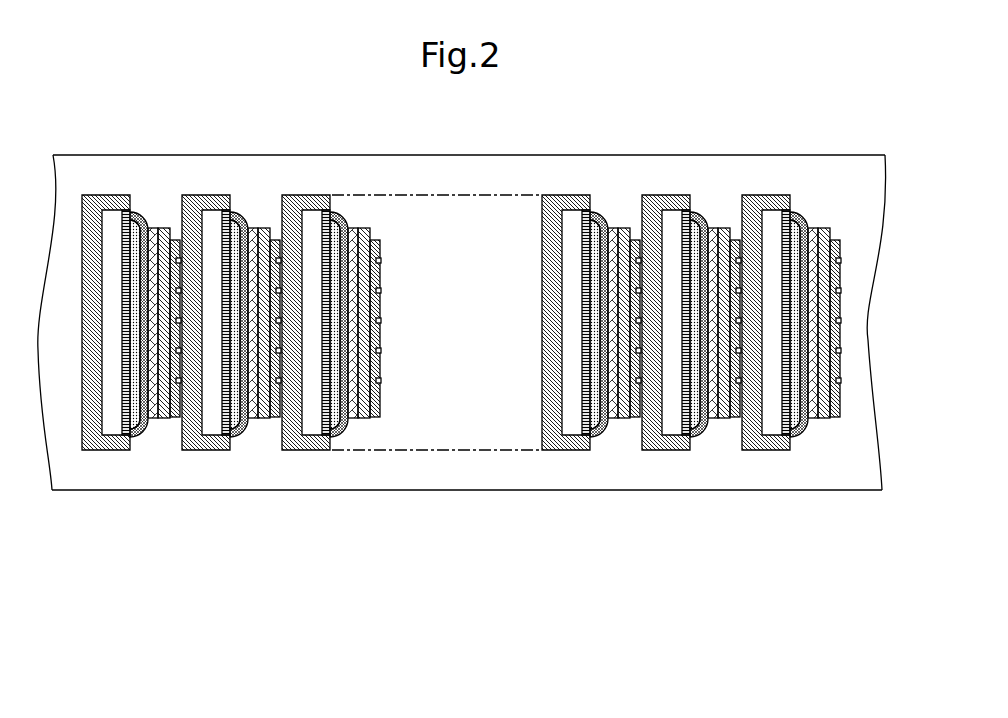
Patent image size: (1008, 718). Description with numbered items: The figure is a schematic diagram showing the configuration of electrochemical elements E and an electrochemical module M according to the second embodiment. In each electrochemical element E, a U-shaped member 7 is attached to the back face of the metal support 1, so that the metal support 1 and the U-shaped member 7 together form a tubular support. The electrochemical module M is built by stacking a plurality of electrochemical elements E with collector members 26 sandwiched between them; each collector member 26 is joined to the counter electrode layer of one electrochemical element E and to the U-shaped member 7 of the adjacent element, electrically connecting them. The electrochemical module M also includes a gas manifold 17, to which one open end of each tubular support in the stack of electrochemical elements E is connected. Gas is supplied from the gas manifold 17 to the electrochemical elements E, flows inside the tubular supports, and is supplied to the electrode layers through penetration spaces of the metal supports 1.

The U-shaped member 7 is at (81, 237).
The metal support 1 is at (125, 200).
The gas manifold 17 is at (437, 172).
The collector member 26 is at (173, 428).
The electrochemical element E is at (131, 457).
The electrochemical module M is at (517, 533).